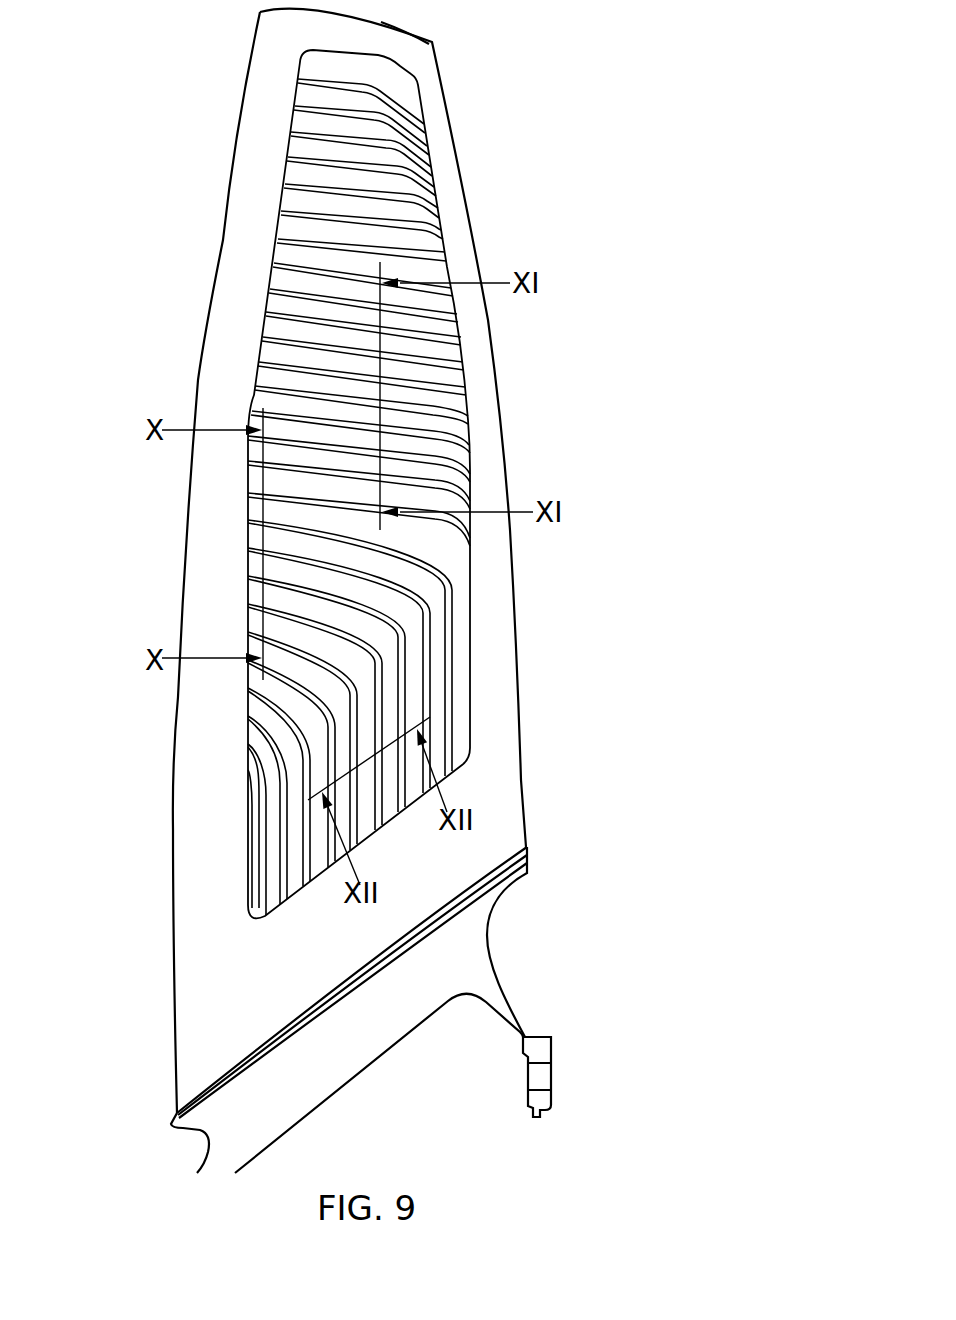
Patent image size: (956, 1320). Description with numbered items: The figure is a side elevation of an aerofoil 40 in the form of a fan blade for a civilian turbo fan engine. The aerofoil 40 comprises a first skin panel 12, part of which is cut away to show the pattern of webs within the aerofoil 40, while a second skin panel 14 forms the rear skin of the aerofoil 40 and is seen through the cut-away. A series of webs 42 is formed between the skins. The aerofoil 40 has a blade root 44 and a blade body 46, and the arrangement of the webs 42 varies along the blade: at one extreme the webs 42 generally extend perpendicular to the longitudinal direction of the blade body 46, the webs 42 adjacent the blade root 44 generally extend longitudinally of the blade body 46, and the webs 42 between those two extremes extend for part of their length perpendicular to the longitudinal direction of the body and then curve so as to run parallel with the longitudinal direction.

The aerofoil 40 is at (380, 590).
The first skin panel 12 is at (503, 632).
The blade body 46 is at (455, 203).
The blade root 44 is at (477, 937).
The second skin panel 14 is at (460, 556).
The webs 42 is at (295, 134).